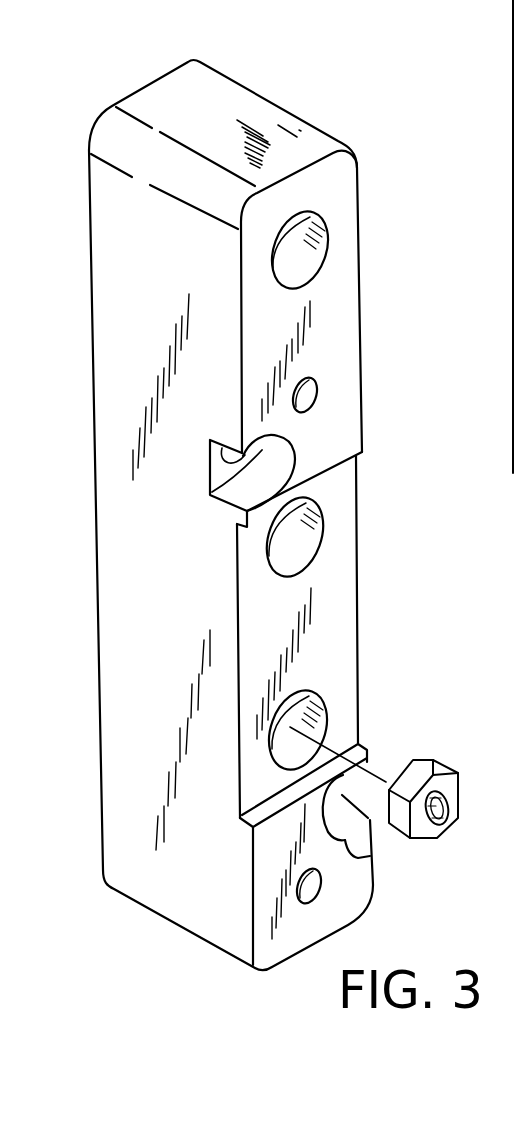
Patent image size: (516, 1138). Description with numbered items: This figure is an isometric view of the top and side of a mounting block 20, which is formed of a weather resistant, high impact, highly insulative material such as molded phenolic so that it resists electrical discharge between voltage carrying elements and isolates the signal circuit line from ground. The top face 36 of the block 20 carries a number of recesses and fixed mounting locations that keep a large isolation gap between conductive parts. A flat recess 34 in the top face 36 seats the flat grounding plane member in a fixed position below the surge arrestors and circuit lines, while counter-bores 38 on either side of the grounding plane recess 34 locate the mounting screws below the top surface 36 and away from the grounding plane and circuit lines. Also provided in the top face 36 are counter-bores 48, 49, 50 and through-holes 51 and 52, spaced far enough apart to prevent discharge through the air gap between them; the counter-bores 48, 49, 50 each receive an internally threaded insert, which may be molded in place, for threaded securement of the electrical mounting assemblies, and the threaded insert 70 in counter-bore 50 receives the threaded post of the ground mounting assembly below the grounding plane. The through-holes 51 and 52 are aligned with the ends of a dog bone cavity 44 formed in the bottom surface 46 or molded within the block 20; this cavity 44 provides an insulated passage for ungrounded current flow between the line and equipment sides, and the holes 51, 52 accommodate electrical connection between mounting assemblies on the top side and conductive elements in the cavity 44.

The mounting block 20 is at (235, 506).
The flat recess 34 is at (333, 618).
The top face 36 is at (339, 327).
The counter-bores 38 is at (220, 475).
The dog bone cavity 44 is at (513, 130).
The bottom surface 46 is at (92, 233).
The counter-bore 48 is at (314, 248).
The counter-bore 49 is at (316, 534).
The counter-bore 50 is at (318, 708).
The through-hole 51 is at (310, 408).
The through-hole 52 is at (320, 890).
The threaded insert 70 is at (458, 800).